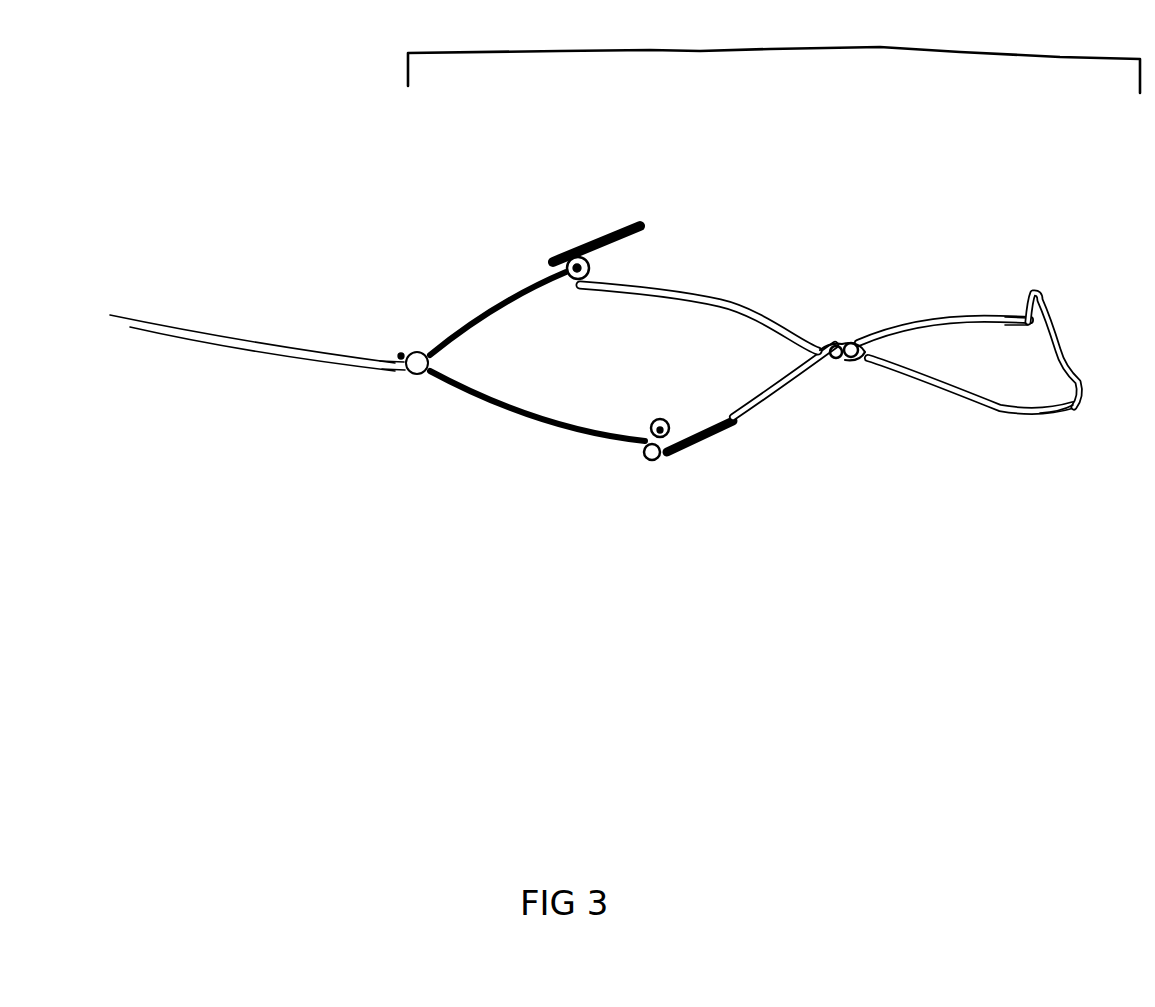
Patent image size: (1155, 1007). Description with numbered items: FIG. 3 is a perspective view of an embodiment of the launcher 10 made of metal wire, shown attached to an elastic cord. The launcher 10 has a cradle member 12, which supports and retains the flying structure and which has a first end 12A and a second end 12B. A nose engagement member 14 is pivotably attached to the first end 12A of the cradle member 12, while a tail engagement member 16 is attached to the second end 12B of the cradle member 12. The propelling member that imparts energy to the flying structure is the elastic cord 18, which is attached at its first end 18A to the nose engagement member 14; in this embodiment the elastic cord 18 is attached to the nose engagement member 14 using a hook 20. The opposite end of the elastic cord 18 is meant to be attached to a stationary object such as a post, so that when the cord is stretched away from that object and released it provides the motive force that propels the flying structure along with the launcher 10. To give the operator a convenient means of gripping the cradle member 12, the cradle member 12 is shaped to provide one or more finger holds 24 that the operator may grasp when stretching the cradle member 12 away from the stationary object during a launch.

The launcher 10 is at (774, 50).
The cradle member 12 is at (718, 298).
The first end of the cradle member 12A is at (593, 272).
The second end of the cradle member 12B is at (1013, 318).
The nose engagement member 14 is at (527, 420).
The tail engagement member 16 is at (1058, 331).
The elastic cord 18 is at (244, 345).
The first end of the elastic cord 18A is at (389, 358).
The hook 20 is at (420, 380).
The finger hold 24 is at (1073, 407).